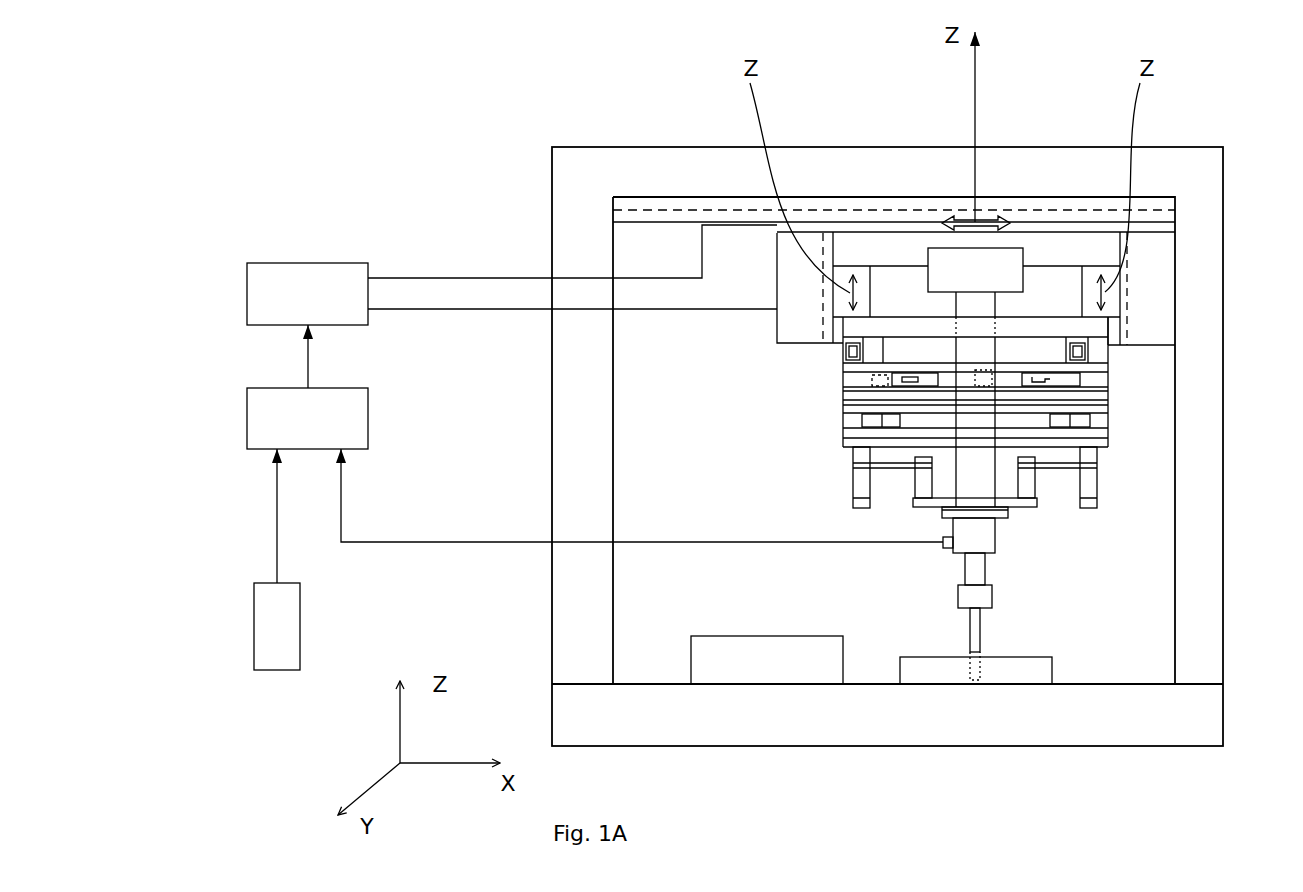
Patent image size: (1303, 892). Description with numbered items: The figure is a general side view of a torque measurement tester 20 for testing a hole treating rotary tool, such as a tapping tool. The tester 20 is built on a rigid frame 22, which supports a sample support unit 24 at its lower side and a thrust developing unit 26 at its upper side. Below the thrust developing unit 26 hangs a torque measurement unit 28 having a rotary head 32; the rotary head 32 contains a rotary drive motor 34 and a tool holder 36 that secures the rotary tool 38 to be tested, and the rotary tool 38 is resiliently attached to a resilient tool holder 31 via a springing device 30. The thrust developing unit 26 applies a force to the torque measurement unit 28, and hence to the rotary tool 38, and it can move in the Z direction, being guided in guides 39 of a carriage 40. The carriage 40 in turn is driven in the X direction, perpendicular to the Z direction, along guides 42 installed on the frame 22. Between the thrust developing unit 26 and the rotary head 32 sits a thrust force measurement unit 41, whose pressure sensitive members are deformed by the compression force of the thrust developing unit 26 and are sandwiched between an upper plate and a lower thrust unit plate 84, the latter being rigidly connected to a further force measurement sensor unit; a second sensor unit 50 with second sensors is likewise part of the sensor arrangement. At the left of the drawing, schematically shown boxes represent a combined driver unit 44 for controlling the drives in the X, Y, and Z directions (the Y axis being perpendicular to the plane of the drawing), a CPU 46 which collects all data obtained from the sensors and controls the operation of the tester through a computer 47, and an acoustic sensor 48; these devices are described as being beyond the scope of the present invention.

The torque measurement tester 20 is at (937, 133).
The rigid frame 22 is at (1177, 147).
The sample support unit 24 is at (1028, 675).
The thrust developing unit 26 is at (1098, 270).
The torque measurement unit 28 is at (1115, 412).
The springing device 30 is at (1060, 502).
The resilient tool holder 31 is at (1100, 475).
The rotary head 32 is at (937, 260).
The rotary drive motor 34 is at (1012, 262).
The tool holder 36 is at (997, 593).
The rotary tool 38 is at (982, 630).
The guides 39 is at (1127, 293).
The carriage 40 is at (798, 290).
The thrust force measurement unit 41 is at (842, 354).
The guides 42 is at (918, 225).
The combined driver unit 44 is at (305, 278).
The CPU 46 is at (368, 412).
The computer 47 is at (300, 625).
The acoustic sensor 48 is at (943, 548).
The second sensor unit 50 is at (788, 663).
The lower thrust unit plate 84 is at (1100, 367).